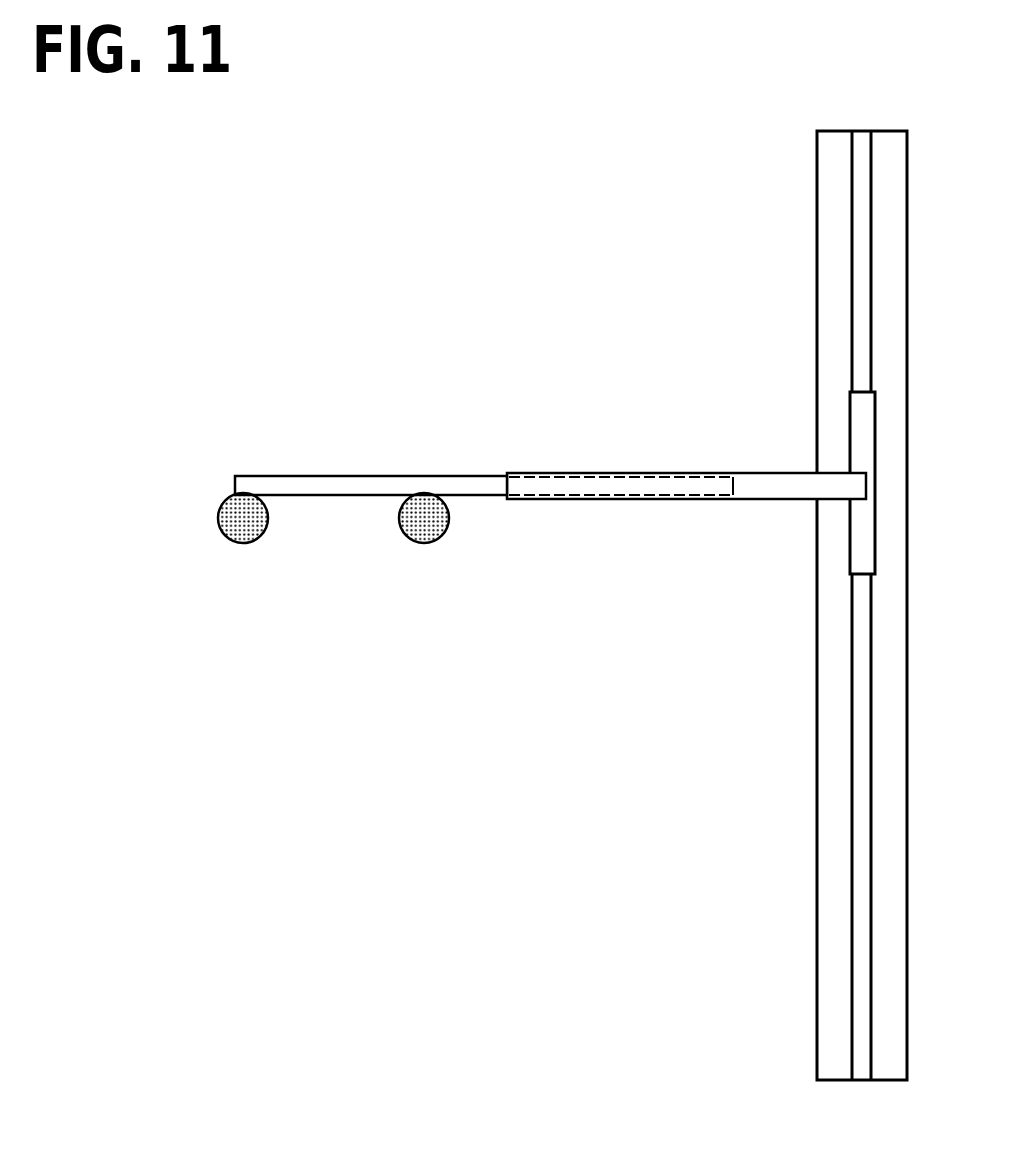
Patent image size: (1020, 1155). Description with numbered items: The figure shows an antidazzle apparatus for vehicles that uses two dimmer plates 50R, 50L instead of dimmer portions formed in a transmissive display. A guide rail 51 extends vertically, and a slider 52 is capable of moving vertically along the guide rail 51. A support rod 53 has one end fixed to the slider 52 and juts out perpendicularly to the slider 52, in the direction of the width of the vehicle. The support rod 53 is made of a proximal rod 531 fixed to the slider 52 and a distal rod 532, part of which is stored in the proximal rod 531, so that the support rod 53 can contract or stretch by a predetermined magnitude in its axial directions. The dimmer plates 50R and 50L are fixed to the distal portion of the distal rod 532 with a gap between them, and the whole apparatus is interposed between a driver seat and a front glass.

The guide rail 51 is at (816, 328).
The slider 52 is at (849, 561).
The support rod 53 is at (550, 404).
The proximal rod 531 is at (693, 473).
The distal rod 532 is at (322, 476).
The dimmer plate 50L is at (247, 543).
The dimmer plate 50R is at (423, 543).